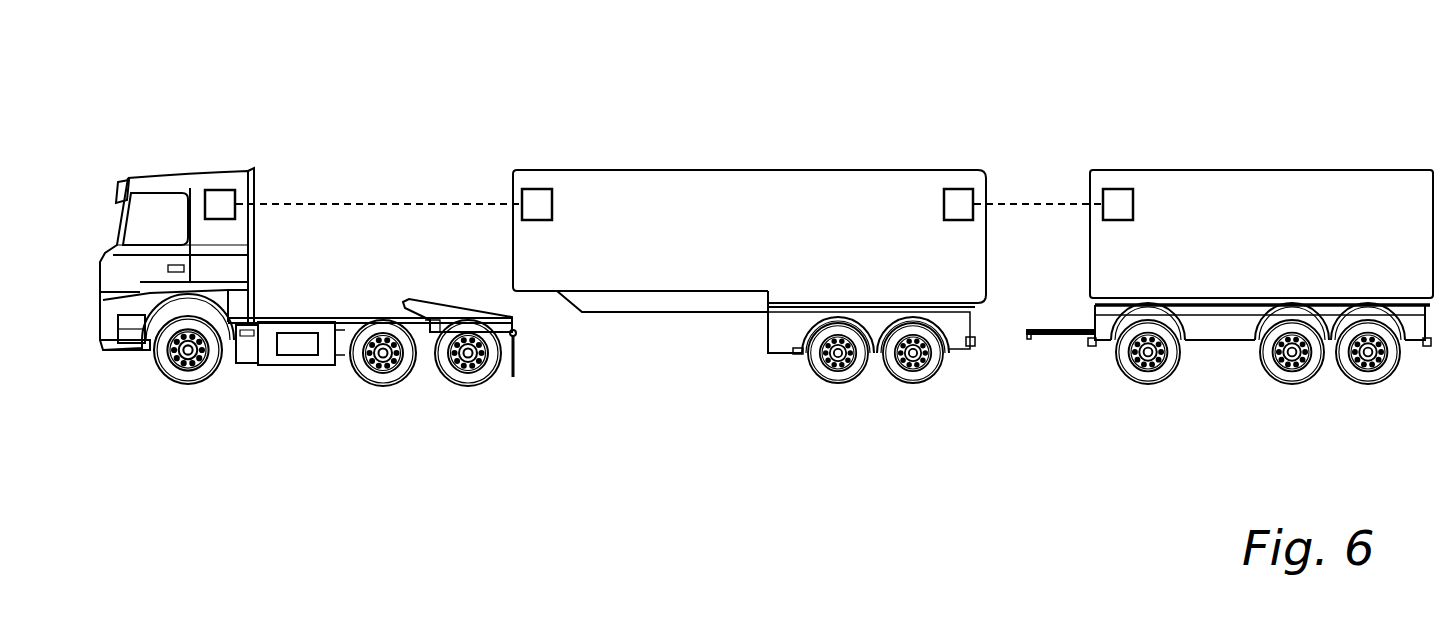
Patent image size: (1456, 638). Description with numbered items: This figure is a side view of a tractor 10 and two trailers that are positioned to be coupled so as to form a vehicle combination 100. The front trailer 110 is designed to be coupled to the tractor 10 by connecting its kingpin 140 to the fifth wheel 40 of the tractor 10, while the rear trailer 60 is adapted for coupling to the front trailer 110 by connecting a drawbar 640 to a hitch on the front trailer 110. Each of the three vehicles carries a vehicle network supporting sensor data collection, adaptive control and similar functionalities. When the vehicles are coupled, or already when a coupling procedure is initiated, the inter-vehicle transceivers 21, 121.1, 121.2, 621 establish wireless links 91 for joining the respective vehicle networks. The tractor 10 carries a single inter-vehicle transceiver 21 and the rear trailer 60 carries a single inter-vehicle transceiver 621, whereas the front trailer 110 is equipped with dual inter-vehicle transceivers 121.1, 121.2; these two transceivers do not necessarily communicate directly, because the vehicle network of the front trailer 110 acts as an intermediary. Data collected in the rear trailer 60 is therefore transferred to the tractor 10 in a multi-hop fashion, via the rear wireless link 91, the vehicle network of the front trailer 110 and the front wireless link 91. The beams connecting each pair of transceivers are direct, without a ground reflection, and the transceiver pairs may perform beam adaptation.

The vehicle combination 100 is at (150, 108).
The tractor 10 is at (315, 368).
The inter-vehicle transceiver 21 is at (222, 190).
The fifth wheel 40 is at (415, 322).
The wireless link 91 is at (367, 203).
The front trailer 110 is at (707, 170).
The inter-vehicle transceiver 121.1 is at (537, 189).
The inter-vehicle transceiver 121.2 is at (960, 187).
The kingpin 140 is at (623, 312).
The second trailer 60 is at (1213, 340).
The inter-vehicle transceiver 621 is at (1118, 189).
The drawbar 640 is at (1040, 336).